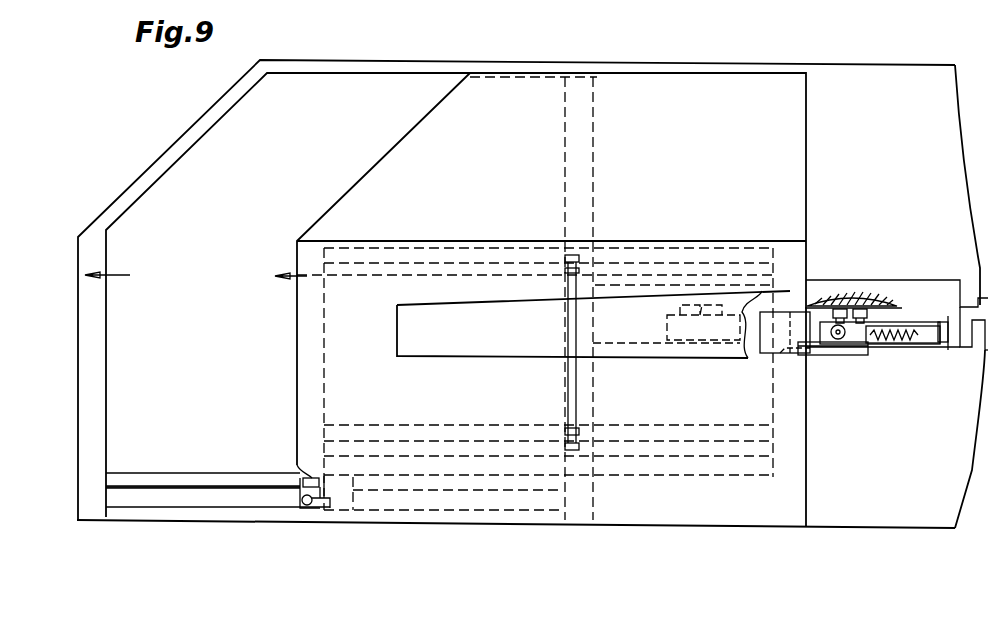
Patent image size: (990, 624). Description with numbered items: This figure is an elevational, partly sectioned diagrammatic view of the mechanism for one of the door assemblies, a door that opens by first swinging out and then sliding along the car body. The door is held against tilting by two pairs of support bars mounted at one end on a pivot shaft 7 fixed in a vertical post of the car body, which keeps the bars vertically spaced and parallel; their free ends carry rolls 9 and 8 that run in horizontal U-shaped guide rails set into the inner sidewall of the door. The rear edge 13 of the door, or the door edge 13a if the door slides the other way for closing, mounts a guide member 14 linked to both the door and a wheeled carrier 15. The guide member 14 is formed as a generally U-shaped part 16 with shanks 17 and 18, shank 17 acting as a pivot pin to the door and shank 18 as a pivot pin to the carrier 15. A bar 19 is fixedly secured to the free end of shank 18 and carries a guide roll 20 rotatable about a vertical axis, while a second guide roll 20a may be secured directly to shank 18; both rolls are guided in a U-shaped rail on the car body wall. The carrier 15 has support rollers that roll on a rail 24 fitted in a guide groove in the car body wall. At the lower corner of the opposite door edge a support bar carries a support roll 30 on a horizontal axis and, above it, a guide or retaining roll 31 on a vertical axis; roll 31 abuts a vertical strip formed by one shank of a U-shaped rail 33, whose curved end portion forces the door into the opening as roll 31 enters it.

The rear edge 13 is at (806, 121).
The door edge 13a is at (297, 303).
The roll 9 is at (355, 270).
The roll 8 is at (355, 425).
The pivot shaft 7 is at (573, 405).
The rail 33 is at (215, 500).
The guide or retaining roll 31 is at (307, 490).
The support roll 30 is at (310, 504).
The guide roll 20 is at (838, 305).
The bar 19 is at (842, 310).
The second guide roll 20a is at (862, 310).
The shank 17 is at (800, 335).
The U-shaped part 16 is at (815, 355).
The guide member 14 is at (842, 362).
The shank 18 is at (868, 348).
The wheeled carrier 15 is at (932, 318).
The rail 24 is at (982, 348).